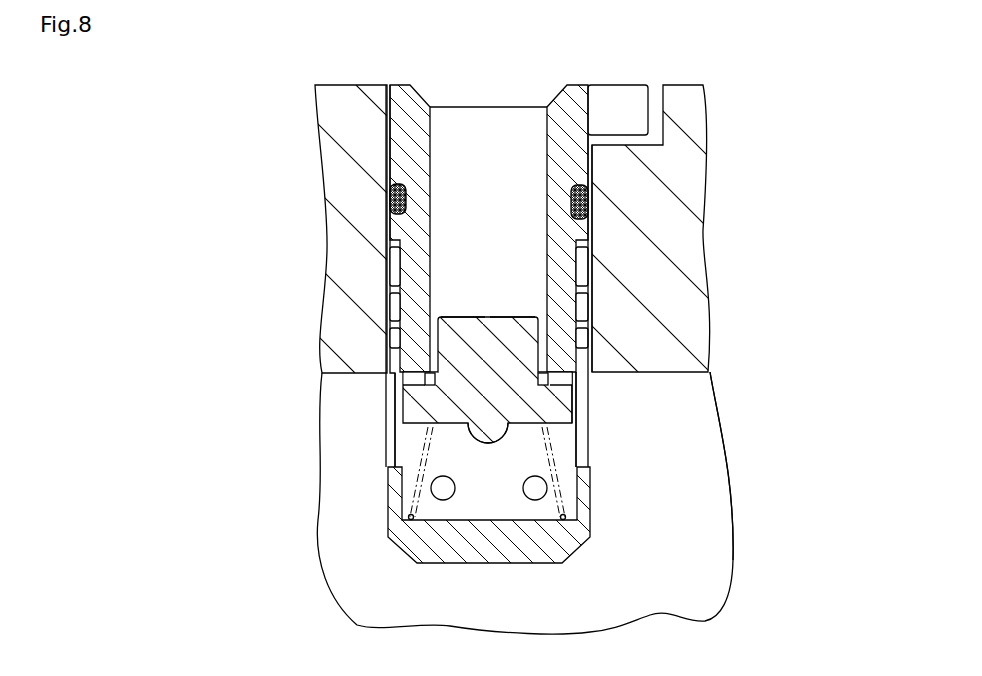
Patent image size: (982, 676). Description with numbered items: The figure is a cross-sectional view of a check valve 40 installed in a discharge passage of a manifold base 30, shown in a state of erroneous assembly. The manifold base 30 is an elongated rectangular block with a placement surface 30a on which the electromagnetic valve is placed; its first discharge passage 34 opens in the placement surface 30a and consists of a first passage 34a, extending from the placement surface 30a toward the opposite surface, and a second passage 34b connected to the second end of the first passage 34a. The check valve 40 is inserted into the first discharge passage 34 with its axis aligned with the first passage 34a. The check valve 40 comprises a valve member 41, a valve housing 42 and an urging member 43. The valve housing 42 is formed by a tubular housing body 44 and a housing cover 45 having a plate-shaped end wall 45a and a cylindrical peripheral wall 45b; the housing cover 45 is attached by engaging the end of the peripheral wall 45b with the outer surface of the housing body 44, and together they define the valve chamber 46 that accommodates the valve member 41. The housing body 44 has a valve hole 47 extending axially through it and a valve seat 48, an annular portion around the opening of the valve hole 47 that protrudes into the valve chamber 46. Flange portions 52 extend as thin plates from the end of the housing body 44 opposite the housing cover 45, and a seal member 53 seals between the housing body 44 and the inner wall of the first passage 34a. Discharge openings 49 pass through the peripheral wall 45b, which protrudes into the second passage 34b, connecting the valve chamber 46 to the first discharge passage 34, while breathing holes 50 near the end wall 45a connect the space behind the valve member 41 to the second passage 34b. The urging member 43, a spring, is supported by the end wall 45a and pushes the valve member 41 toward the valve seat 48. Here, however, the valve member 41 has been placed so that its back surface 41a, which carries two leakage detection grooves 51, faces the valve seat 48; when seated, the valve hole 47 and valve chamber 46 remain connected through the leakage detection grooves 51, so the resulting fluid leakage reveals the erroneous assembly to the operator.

The manifold base 30 is at (700, 105).
The placement surface 30a is at (338, 85).
The first discharge passage 34 is at (345, 517).
The first passage 34a is at (470, 158).
The second passage 34b is at (702, 530).
The check valve 40 is at (650, 82).
The valve member 41 is at (410, 406).
The back surface 41a is at (537, 320).
The valve housing 42 is at (593, 165).
The urging member 43 is at (417, 537).
The housing body 44 is at (590, 249).
The housing cover 45 is at (588, 345).
The end wall 45a is at (485, 563).
The peripheral wall 45b is at (387, 274).
The valve chamber 46 is at (580, 455).
The valve hole 47 is at (393, 187).
The valve seat 48 is at (430, 398).
The discharge opening 49 is at (398, 428).
The breathing hole 50 is at (443, 492).
The leakage detection groove 51 is at (428, 378).
The flange portion 52 is at (615, 98).
The seal member 53 is at (592, 205).